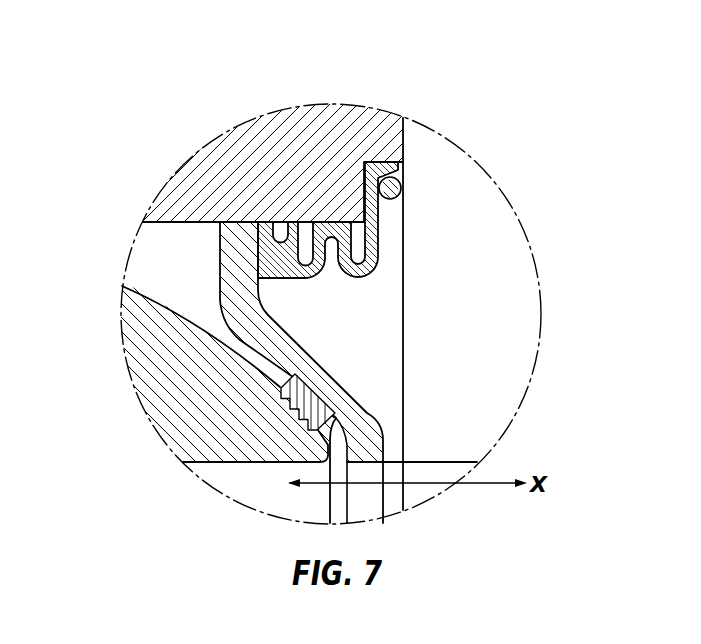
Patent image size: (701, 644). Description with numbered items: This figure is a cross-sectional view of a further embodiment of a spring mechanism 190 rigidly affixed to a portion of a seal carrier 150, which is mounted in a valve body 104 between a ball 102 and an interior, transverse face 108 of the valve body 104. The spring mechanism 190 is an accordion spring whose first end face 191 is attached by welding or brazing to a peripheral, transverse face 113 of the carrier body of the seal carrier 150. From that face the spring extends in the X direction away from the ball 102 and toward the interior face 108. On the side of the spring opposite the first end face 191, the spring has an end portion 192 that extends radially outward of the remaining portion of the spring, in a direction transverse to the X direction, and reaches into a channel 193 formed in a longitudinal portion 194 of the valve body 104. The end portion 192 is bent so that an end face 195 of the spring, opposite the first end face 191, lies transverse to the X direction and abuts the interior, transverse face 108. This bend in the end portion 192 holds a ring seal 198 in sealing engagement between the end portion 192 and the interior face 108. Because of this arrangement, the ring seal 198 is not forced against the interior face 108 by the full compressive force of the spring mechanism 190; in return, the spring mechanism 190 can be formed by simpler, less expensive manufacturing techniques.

The ball 102 is at (152, 382).
The valve body 104 is at (465, 185).
The interior face 108 is at (403, 372).
The peripheral, transverse face 113 is at (250, 266).
The seal carrier 150 is at (147, 221).
The spring mechanism 190 is at (304, 222).
The first end face 191 is at (212, 282).
The end portion 192 is at (356, 164).
The channel 193 is at (372, 163).
The longitudinal portion 194 is at (253, 140).
The end face 195 is at (403, 170).
The ring seal 198 is at (403, 195).